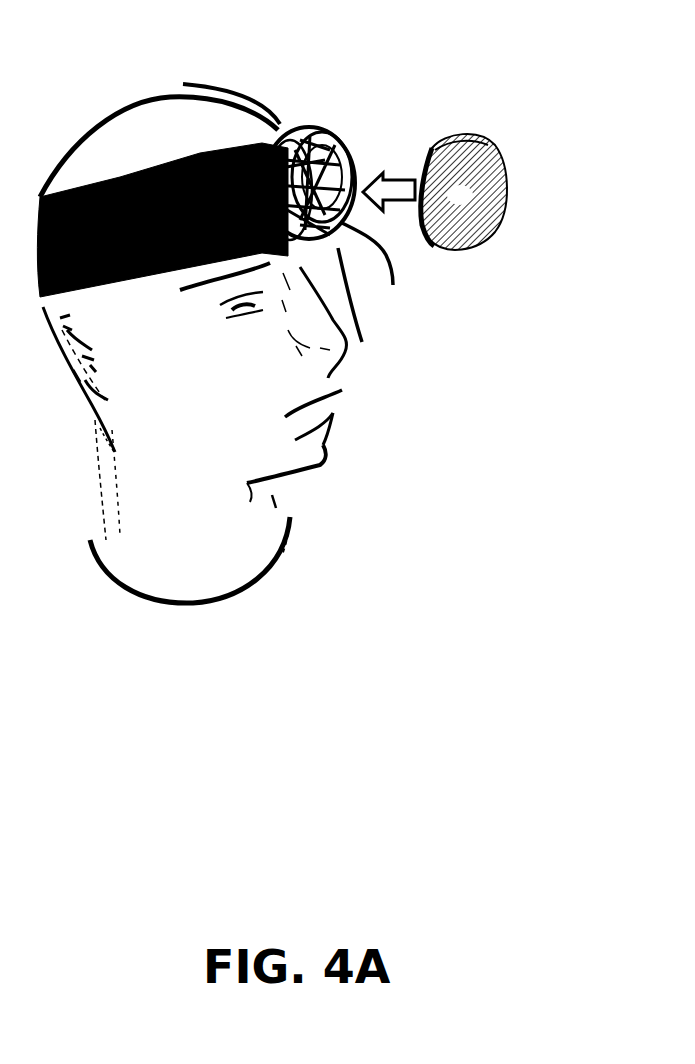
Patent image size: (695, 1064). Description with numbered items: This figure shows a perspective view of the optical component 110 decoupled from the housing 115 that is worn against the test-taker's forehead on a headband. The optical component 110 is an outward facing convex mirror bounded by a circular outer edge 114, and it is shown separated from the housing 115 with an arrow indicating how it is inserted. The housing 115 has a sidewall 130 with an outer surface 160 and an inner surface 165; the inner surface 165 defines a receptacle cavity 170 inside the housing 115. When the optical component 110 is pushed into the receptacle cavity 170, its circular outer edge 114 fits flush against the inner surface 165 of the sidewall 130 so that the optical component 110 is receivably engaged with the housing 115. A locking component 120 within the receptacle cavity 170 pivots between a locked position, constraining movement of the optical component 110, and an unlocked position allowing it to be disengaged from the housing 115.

The optical component 110 is at (492, 242).
The circular outer edge 114 is at (447, 168).
The housing 115 is at (357, 80).
The locking component 120 is at (230, 350).
The sidewall 130 is at (200, 94).
The outer surface 160 is at (162, 234).
The inner surface 165 is at (317, 135).
The receptacle cavity 170 is at (373, 274).